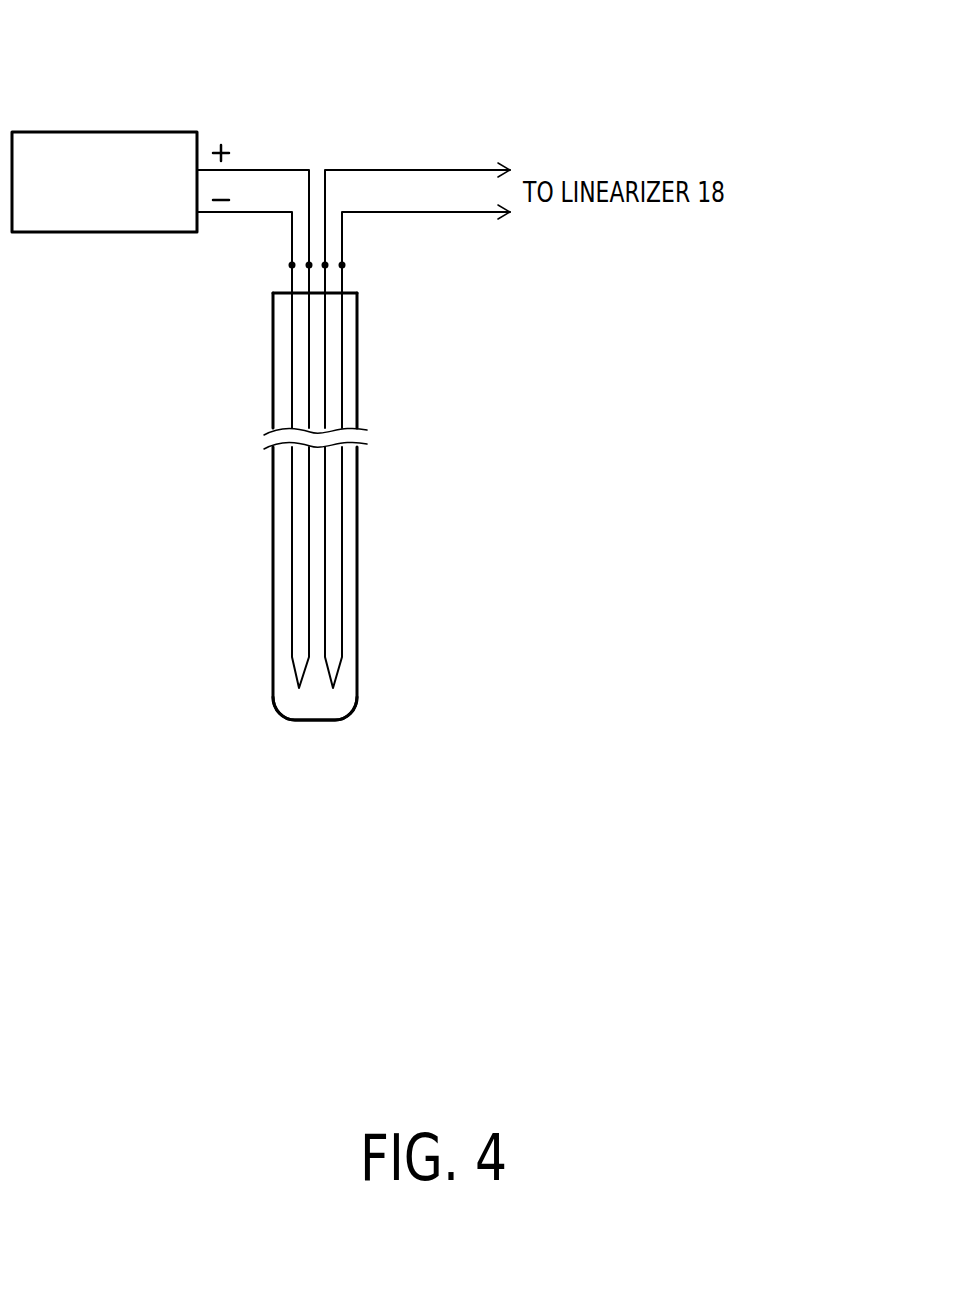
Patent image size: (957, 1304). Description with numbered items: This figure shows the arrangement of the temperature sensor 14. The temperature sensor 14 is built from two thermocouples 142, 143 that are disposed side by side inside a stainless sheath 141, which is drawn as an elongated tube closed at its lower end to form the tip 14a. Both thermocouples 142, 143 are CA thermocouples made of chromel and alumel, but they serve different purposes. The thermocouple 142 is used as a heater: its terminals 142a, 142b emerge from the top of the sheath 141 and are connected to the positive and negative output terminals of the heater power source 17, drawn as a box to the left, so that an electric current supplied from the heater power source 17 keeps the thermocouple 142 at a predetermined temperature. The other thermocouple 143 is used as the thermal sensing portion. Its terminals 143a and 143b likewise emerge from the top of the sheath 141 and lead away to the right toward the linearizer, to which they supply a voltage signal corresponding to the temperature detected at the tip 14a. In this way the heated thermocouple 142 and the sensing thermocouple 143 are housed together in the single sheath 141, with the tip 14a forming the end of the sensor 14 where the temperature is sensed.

The temperature sensor 14 is at (429, 465).
The tip 14a is at (366, 701).
The heater power source 17 is at (88, 132).
The stainless sheath 141 is at (288, 718).
The thermocouple 142 is at (291, 582).
The terminal 142a is at (272, 170).
The terminal 142b is at (292, 232).
The thermocouple 143 is at (343, 625).
The terminal 143a is at (450, 170).
The terminal 143b is at (453, 212).